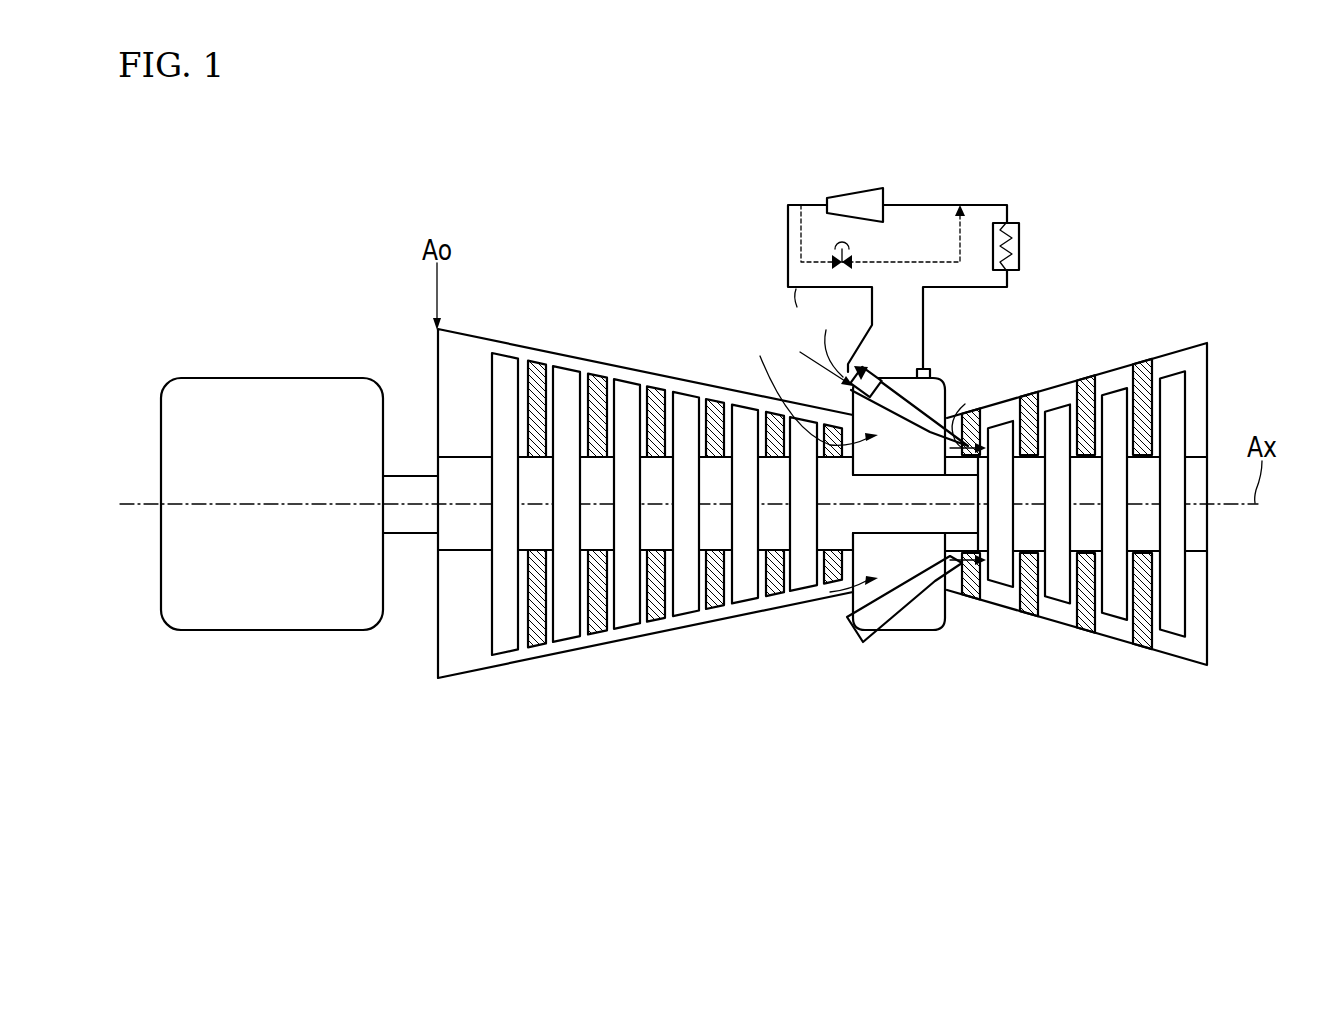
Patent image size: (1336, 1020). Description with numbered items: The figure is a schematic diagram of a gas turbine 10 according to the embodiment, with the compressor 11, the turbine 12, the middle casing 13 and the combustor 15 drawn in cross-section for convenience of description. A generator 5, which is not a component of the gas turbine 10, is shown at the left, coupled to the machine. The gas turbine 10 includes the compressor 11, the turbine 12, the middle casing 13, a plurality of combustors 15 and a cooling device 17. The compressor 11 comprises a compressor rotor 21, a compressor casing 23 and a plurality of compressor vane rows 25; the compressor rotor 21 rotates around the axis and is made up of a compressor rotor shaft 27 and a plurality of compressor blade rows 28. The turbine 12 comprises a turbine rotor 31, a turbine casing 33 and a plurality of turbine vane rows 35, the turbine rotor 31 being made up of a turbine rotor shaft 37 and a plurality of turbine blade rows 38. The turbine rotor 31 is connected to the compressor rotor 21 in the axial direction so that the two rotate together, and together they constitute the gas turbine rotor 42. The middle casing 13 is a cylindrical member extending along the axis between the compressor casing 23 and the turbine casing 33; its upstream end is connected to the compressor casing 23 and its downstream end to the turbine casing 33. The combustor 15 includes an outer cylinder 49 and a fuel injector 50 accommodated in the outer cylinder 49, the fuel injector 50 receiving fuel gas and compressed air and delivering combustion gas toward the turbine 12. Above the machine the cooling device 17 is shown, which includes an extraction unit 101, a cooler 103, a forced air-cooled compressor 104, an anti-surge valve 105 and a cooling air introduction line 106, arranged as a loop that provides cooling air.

The generator 5 is at (226, 378).
The gas turbine 10 is at (463, 165).
The compressor 11 is at (625, 348).
The turbine 12 is at (1176, 335).
The middle casing 13 is at (933, 378).
The combustor 15 is at (890, 488).
The cooling device 17 is at (884, 251).
The compressor rotor 21 is at (644, 590).
The compressor casing 23 is at (485, 337).
The compressor vane rows 25 is at (648, 650).
The compressor rotor shaft 27 is at (466, 545).
The compressor blade rows 28 is at (500, 654).
The turbine rotor 31 is at (1119, 599).
The turbine casing 33 is at (1112, 370).
The turbine vane rows 35 is at (1080, 648).
The turbine rotor shaft 37 is at (1198, 538).
The turbine blade rows 38 is at (1170, 637).
The gas turbine rotor 42 is at (443, 568).
The outer cylinder 49 is at (884, 426).
The fuel injector 50 is at (849, 401).
The extraction unit 101 is at (915, 371).
The cooler 103 is at (1031, 224).
The forced air-cooled compressor 104 is at (846, 197).
The anti-surge valve 105 is at (851, 250).
The cooling air introduction line 106 is at (787, 252).